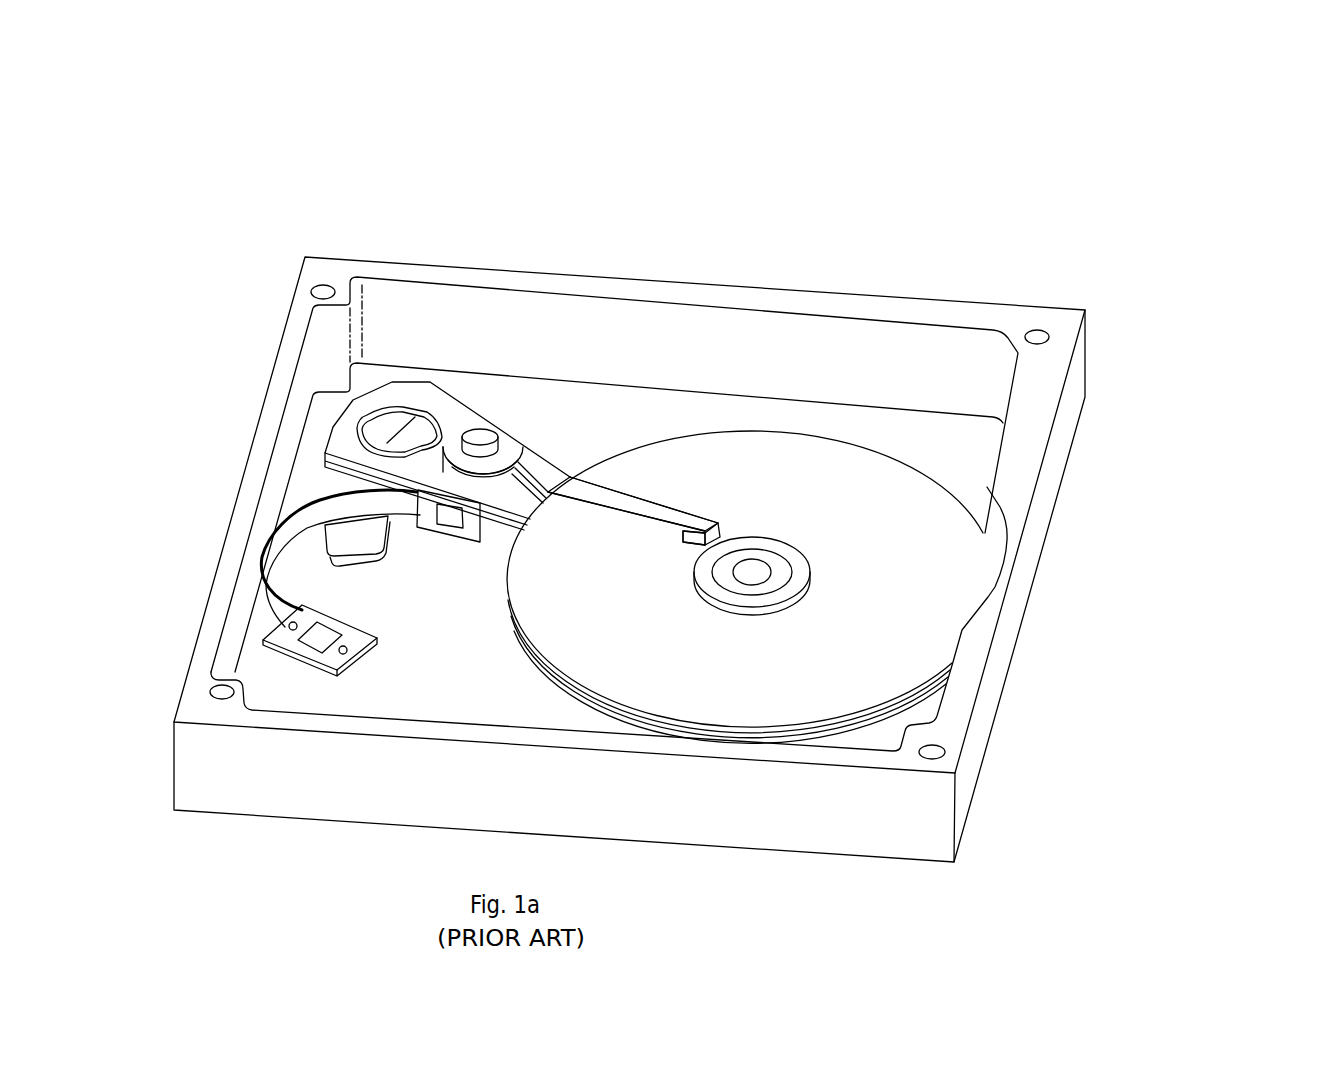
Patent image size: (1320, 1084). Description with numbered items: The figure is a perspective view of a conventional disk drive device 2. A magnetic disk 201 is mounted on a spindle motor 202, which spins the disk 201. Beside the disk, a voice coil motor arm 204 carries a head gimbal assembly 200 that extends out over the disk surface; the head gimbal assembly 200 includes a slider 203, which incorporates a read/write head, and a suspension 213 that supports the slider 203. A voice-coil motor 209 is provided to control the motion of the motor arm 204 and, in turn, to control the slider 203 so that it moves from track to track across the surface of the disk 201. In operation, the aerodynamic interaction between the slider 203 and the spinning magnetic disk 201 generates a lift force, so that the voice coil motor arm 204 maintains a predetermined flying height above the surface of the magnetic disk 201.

The disk drive device 2 is at (438, 91).
The head gimbal assembly 200 is at (873, 196).
The magnetic disk 201 is at (922, 530).
The spindle motor 202 is at (803, 580).
The slider 203 is at (718, 523).
The voice coil motor arm 204 is at (533, 465).
The voice-coil motor 209 is at (362, 533).
The suspension 213 is at (656, 510).